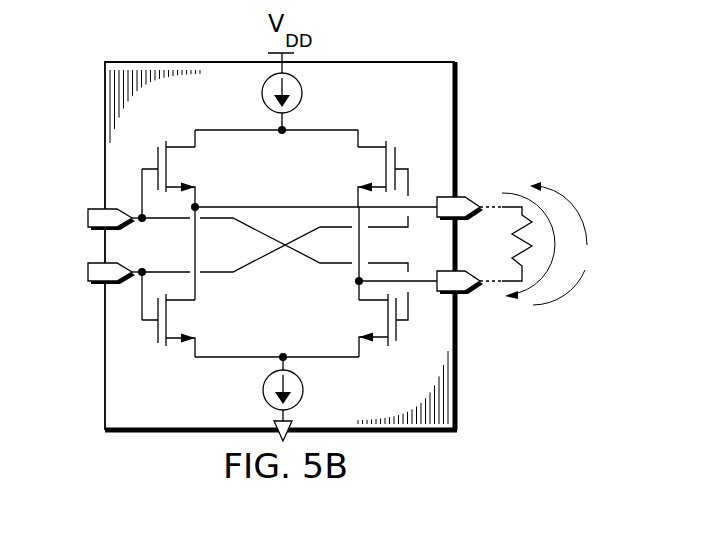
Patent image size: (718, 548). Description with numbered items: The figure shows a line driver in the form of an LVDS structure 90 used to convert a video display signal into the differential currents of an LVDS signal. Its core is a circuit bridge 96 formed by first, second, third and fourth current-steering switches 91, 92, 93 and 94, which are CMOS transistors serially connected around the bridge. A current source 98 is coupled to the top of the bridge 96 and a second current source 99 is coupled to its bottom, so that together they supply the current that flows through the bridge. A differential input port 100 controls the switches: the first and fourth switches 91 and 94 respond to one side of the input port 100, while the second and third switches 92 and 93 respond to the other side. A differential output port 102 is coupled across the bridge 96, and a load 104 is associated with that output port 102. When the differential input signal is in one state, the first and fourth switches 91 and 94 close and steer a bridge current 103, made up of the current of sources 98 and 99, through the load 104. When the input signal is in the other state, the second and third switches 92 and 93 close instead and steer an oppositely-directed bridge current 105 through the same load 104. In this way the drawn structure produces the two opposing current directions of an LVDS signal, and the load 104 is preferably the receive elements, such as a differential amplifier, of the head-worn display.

The LVDS structure 90 is at (210, 56).
The first current-steering switch 91 is at (175, 179).
The second current-steering switch 92 is at (378, 184).
The third current-steering switch 93 is at (176, 314).
The fourth current-steering switch 94 is at (380, 310).
The circuit bridge 96 is at (378, 126).
The current source 98 is at (267, 101).
The current source 99 is at (267, 389).
The differential input port 100 is at (82, 193).
The differential output port 102 is at (578, 243).
The bridge current 103 is at (558, 213).
The load 104 is at (501, 244).
The oppositely-directed bridge current 105 is at (575, 277).